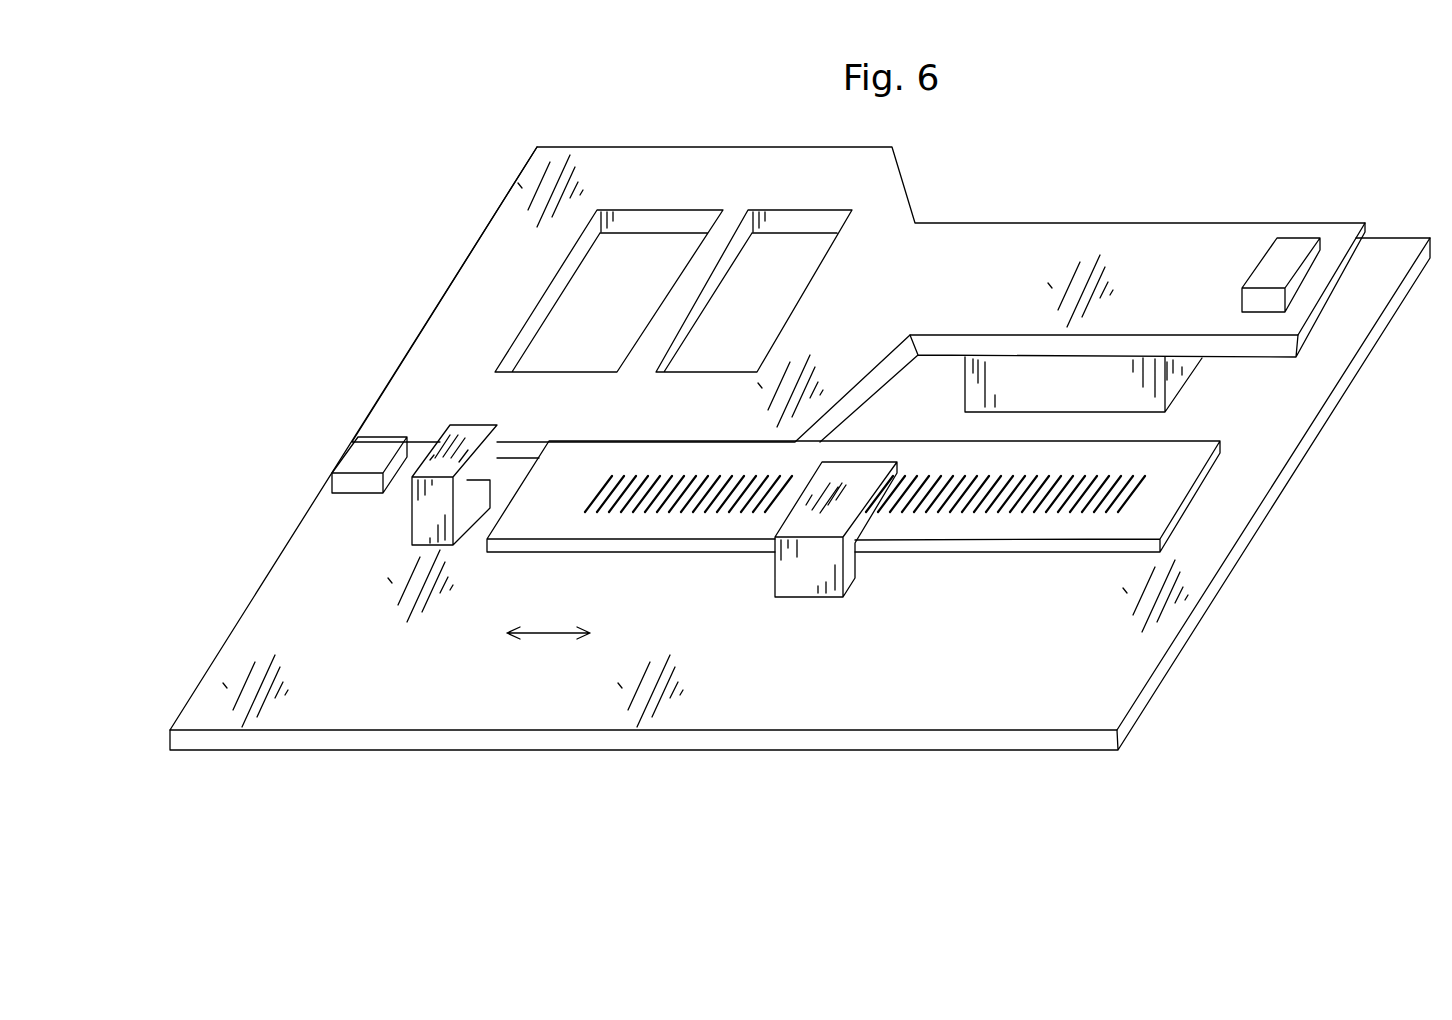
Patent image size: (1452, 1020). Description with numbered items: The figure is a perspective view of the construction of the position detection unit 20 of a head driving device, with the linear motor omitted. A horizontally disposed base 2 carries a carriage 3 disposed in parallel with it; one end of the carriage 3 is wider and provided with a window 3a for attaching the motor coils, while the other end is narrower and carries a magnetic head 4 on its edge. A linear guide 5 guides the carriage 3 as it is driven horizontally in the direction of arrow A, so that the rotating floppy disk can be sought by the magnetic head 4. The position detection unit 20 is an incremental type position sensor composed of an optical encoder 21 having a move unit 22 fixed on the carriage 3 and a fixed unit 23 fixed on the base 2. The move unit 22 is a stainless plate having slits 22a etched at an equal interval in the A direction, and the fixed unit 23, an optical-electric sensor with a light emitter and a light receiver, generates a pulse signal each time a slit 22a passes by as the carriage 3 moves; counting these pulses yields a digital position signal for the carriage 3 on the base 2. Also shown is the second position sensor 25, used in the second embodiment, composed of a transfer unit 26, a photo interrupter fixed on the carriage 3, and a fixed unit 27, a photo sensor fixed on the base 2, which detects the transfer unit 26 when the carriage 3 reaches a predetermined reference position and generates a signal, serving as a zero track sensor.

The base 2 is at (1113, 683).
The carriage 3 is at (1003, 245).
The window 3a is at (659, 250).
The magnetic head 4 is at (1285, 257).
The linear guide 5 is at (1173, 395).
The position detection unit 20 is at (745, 680).
The optical encoder 21 is at (767, 660).
The move unit 22 is at (962, 530).
The slits 22a is at (712, 505).
The fixed unit 23 is at (803, 577).
The second position sensor 25 is at (270, 427).
The transfer unit 26 is at (342, 483).
The fixed unit 27 is at (423, 522).